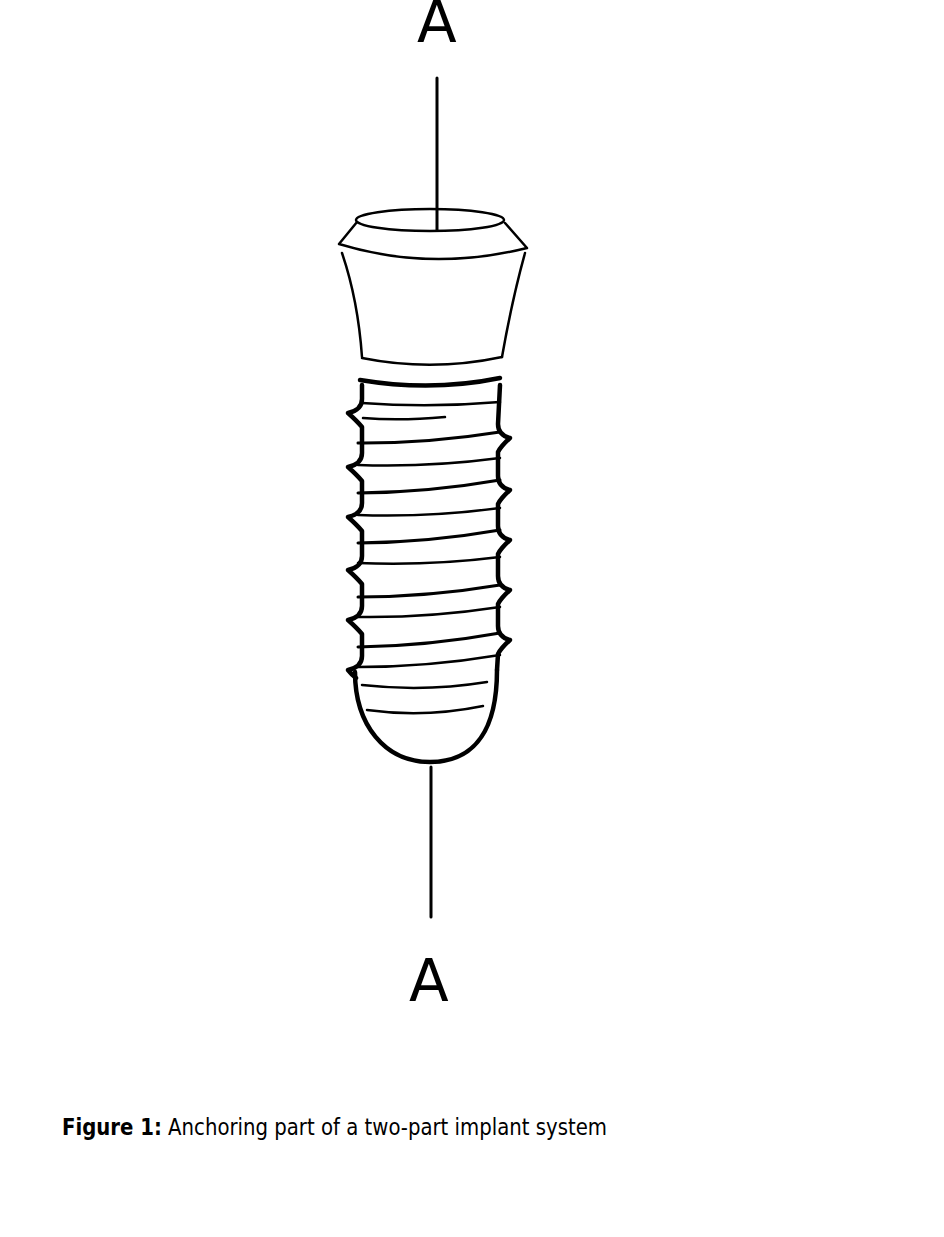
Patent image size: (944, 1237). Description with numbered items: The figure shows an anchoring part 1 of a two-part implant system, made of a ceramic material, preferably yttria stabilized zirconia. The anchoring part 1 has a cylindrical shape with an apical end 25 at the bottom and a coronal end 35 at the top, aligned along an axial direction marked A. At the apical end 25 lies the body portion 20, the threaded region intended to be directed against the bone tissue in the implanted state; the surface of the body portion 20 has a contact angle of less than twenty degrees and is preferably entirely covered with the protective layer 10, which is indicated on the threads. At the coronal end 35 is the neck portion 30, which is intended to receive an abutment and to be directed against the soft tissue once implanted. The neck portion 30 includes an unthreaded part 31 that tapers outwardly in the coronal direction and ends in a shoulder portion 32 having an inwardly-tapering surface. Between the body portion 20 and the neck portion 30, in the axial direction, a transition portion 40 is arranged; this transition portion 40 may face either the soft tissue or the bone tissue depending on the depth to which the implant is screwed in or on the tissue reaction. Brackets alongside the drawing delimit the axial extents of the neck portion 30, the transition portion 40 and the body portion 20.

The anchoring part 1 is at (545, 663).
The protective layer 10 is at (355, 487).
The body portion 20 is at (440, 762).
The apical end 25 is at (407, 759).
The neck portion 30 is at (508, 223).
The unthreaded part 31 is at (348, 278).
The shoulder portion 32 is at (518, 230).
The coronal end 35 is at (387, 212).
The transition portion 40 is at (502, 383).